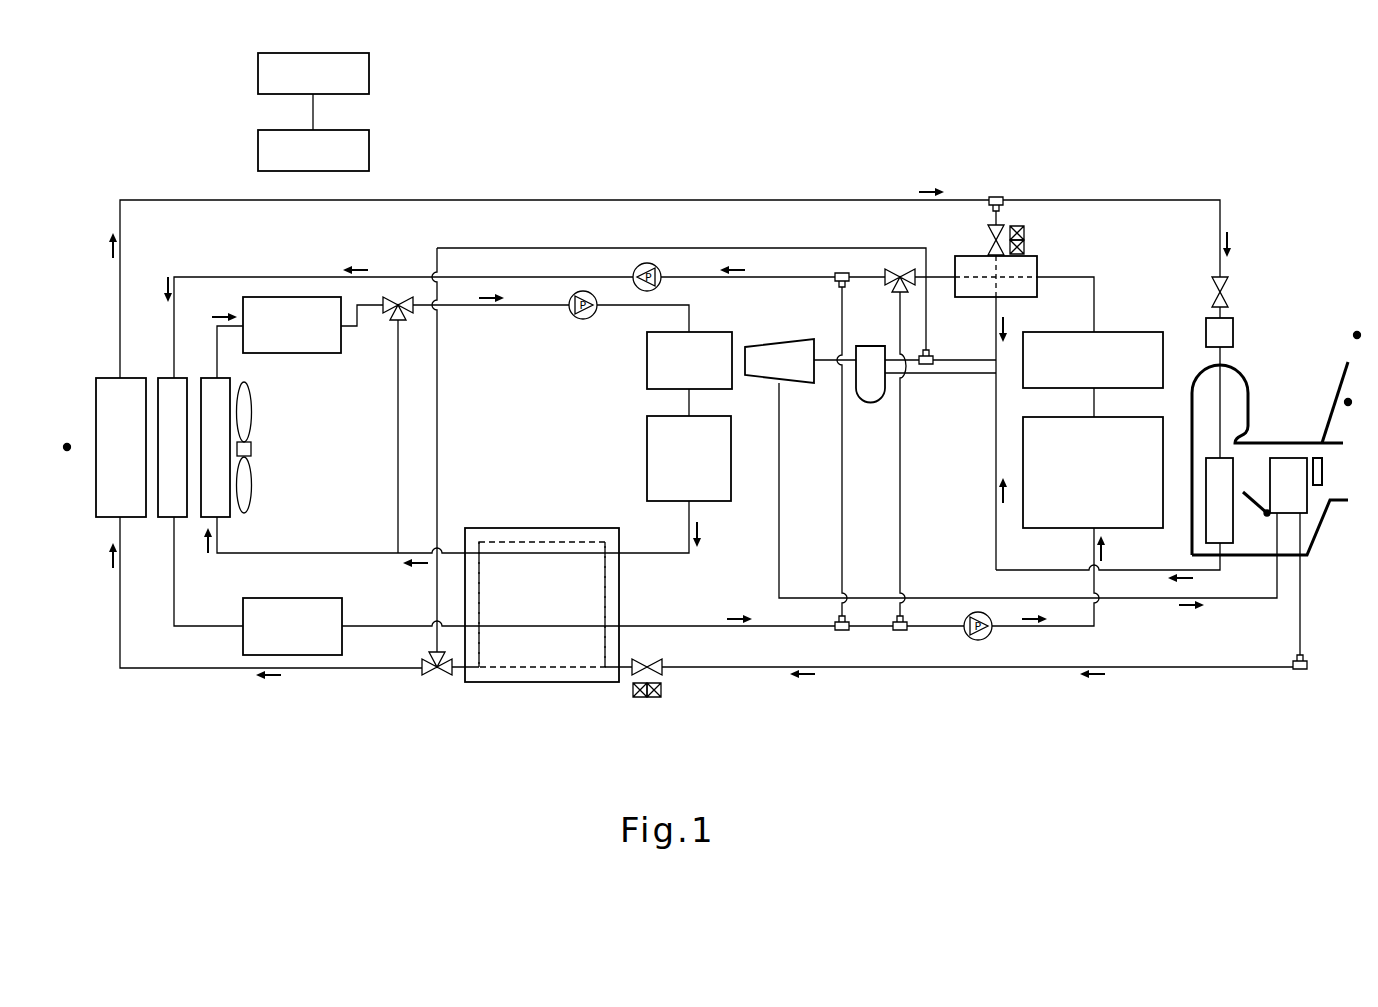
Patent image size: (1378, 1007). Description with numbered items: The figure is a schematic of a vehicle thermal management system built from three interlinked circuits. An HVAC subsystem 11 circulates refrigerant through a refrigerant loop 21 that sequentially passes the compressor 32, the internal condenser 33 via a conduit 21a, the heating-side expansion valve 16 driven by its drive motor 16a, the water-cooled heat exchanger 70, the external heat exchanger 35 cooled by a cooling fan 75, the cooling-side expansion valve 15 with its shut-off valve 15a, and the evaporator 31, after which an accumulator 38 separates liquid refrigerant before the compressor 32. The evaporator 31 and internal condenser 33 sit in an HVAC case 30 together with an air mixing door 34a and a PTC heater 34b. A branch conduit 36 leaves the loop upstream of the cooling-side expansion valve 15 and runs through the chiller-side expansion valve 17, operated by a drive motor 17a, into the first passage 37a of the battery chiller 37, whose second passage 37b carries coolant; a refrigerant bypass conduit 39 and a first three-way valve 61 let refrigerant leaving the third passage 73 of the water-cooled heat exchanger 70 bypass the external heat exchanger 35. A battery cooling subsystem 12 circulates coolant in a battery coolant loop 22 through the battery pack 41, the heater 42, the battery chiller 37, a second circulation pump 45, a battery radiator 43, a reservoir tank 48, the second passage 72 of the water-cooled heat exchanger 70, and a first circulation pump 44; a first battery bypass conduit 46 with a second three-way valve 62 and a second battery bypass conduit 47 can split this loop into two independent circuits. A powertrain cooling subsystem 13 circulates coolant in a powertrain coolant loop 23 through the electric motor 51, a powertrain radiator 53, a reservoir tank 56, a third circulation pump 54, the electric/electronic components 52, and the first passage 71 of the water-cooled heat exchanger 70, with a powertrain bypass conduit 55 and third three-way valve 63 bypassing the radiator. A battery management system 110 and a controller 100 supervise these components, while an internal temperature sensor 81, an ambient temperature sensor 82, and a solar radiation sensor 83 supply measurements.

The battery management system 110 is at (369, 74).
The controller 100 is at (369, 151).
The HVAC subsystem 11 is at (823, 184).
The refrigerant loop 21 is at (777, 200).
The second circulation pump 45 is at (647, 263).
The battery coolant loop 22 is at (783, 277).
The refrigerant bypass conduit 39 is at (850, 248).
The second three-way valve 62 is at (900, 263).
The chiller-side expansion valve 17 is at (989, 228).
The drive motor 17a is at (1025, 238).
The first passage 37a is at (990, 271).
The battery chiller 37 is at (1037, 265).
The battery cooling subsystem 12 is at (1095, 282).
The shut-off valve 15a is at (1229, 294).
The cooling-side expansion valve 15 is at (1233, 331).
The solar radiation sensor 83 is at (1357, 332).
The third three-way valve 63 is at (397, 292).
The external heat exchanger 35 is at (98, 378).
The battery radiator 43 is at (160, 378).
The powertrain radiator 53 is at (203, 378).
The third circulation pump 54 is at (581, 319).
The powertrain coolant loop 23 is at (622, 306).
The compressor 32 is at (779, 347).
The accumulator 38 is at (870, 346).
The branch conduit 36 is at (994, 324).
The second passage 37b is at (1023, 280).
The heater 42 is at (1163, 360).
The reservoir tank 56 is at (291, 353).
The ambient temperature sensor 82 is at (67, 444).
The powertrain cooling subsystem 13 is at (637, 403).
The electric/electronic components 52 is at (647, 376).
The powertrain bypass conduit 55 is at (398, 437).
The electric motor 51 is at (647, 469).
The battery pack 41 is at (1023, 450).
The air mixing door 34a is at (1250, 490).
The HVAC case 30 is at (1305, 443).
The internal temperature sensor 81 is at (1350, 405).
The PTC heater 34b is at (1322, 472).
The internal condenser 33 is at (1307, 500).
The cooling fan 75 is at (251, 483).
The second battery bypass conduit 47 is at (842, 478).
The first battery bypass conduit 46 is at (900, 485).
The third passage 73 is at (493, 542).
The first passage 71 is at (575, 553).
The conduit 21a is at (779, 538).
The evaporator 31 is at (1228, 545).
The reservoir tank 48 is at (342, 601).
The second passage 72 is at (605, 630).
The heating-side expansion valve 16 is at (662, 667).
The first three-way valve 61 is at (437, 680).
The water-cooled heat exchanger 70 is at (540, 682).
The drive motor 16a is at (647, 697).
The first circulation pump 44 is at (978, 640).